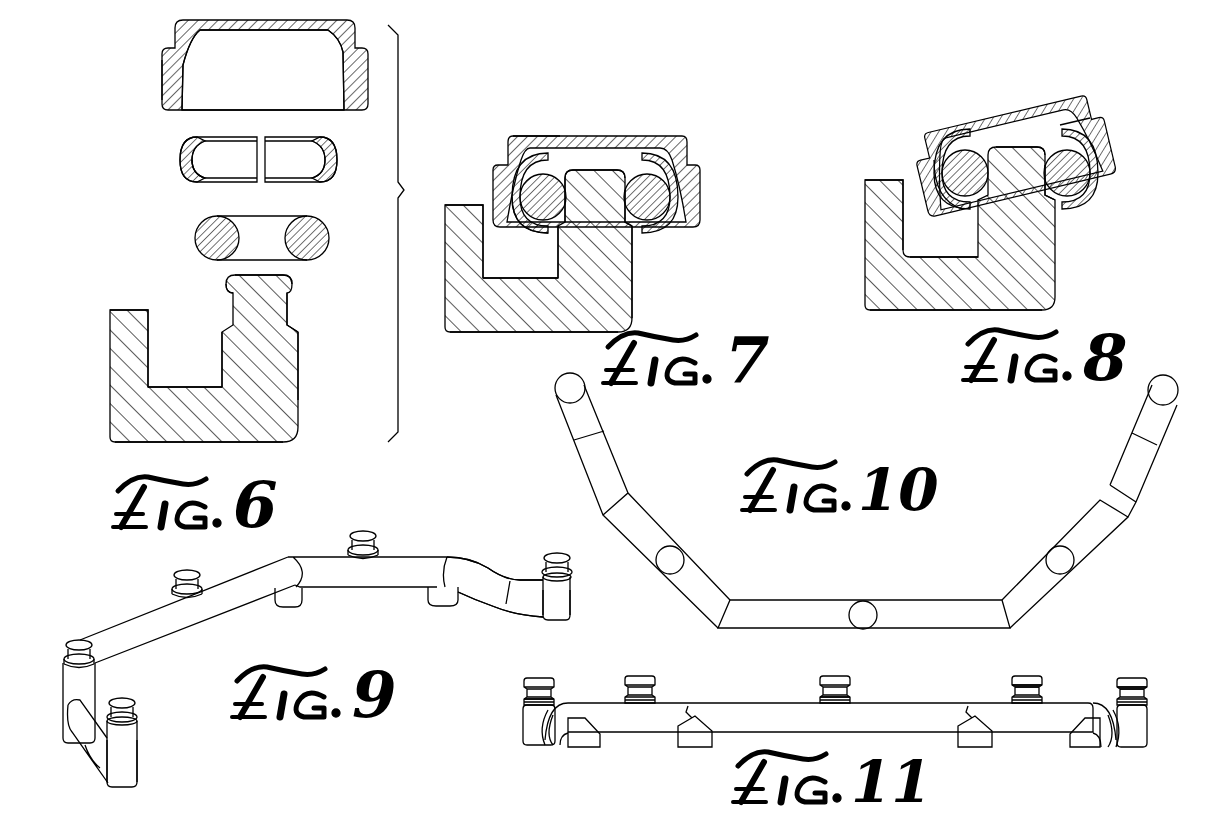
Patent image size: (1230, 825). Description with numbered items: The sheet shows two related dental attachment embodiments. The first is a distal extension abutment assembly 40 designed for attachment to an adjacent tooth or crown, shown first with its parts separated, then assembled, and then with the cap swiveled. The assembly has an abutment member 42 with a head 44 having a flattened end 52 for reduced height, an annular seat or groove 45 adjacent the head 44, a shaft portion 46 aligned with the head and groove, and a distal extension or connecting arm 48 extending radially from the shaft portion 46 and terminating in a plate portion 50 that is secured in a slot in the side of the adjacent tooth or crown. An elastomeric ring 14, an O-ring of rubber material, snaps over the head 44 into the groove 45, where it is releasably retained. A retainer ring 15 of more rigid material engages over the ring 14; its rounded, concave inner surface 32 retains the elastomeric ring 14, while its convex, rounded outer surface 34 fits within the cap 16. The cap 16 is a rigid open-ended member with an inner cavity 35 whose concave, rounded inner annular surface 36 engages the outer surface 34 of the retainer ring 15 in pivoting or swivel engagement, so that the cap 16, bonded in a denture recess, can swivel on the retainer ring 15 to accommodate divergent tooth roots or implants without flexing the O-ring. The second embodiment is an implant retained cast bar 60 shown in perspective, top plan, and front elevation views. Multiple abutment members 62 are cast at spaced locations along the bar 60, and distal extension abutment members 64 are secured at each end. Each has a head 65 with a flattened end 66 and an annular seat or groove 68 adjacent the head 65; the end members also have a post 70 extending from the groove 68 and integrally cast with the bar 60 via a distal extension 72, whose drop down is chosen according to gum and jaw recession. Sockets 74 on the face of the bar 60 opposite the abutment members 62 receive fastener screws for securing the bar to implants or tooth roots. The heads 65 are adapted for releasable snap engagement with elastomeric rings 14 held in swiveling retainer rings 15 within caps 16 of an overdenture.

In FIG. 6, the elastomeric ring 14 is at (200, 240).
In FIG. 7, the elastomeric ring 14 is at (648, 187).
In FIG. 8, the elastomeric ring 14 is at (1074, 173).
In FIG. 6, the retainer ring 15 is at (185, 160).
In FIG. 7, the retainer ring 15 is at (684, 190).
In FIG. 8, the retainer ring 15 is at (1096, 190).
In FIG. 6, the cap 16 is at (158, 97).
In FIG. 7, the cap 16 is at (586, 131).
In FIG. 8, the cap 16 is at (993, 112).
In FIG. 6, the concave inner surface 32 is at (205, 180).
In FIG. 7, the concave inner surface 32 is at (518, 190).
In FIG. 8, the concave inner surface 32 is at (943, 160).
In FIG. 6, the convex outer surface 34 is at (338, 157).
In FIG. 7, the convex outer surface 34 is at (502, 230).
In FIG. 8, the convex outer surface 34 is at (935, 137).
In FIG. 6, the inner cavity 35 is at (244, 84).
In FIG. 6, the inner annular surface 36 is at (184, 75).
In FIG. 7, the inner annular surface 36 is at (530, 157).
In FIG. 8, the inner annular surface 36 is at (1070, 128).
In FIG. 6, the abutment assembly 40 is at (414, 233).
In FIG. 6, the abutment member 42 is at (300, 368).
In FIG. 7, the abutment member 42 is at (638, 280).
In FIG. 8, the abutment member 42 is at (1063, 250).
In FIG. 6, the head 44 is at (290, 280).
In FIG. 7, the head 44 is at (623, 167).
In FIG. 8, the head 44 is at (1030, 148).
In FIG. 6, the annular seat or groove 45 is at (290, 305).
In FIG. 7, the annular seat or groove 45 is at (612, 212).
In FIG. 8, the annular seat or groove 45 is at (1034, 190).
In FIG. 6, the shaft portion 46 is at (270, 350).
In FIG. 7, the shaft portion 46 is at (582, 267).
In FIG. 6, the distal extension or connecting arm 48 is at (190, 400).
In FIG. 7, the distal extension or connecting arm 48 is at (527, 323).
In FIG. 8, the distal extension or connecting arm 48 is at (947, 298).
In FIG. 6, the plate portion 50 is at (128, 360).
In FIG. 7, the plate portion 50 is at (462, 240).
In FIG. 8, the plate portion 50 is at (880, 195).
In FIG. 6, the flattened end 52 is at (230, 283).
In FIG. 7, the flattened end 52 is at (603, 167).
In FIG. 9, the cast bar 60 is at (380, 576).
In FIG. 10, the cast bar 60 is at (935, 597).
In FIG. 11, the cast bar 60 is at (909, 712).
In FIG. 9, the abutment members 62 is at (78, 634).
In FIG. 10, the abutment members 62 is at (1049, 550).
In FIG. 11, the abutment members 62 is at (824, 683).
In FIG. 9, the distal extension abutment members 64 is at (141, 732).
In FIG. 10, the distal extension abutment members 64 is at (553, 390).
In FIG. 11, the distal extension abutment members 64 is at (556, 687).
In FIG. 9, the head 65 is at (189, 570).
In FIG. 11, the head 65 is at (1043, 680).
In FIG. 11, the flattened end 66 is at (1131, 678).
In FIG. 11, the annular seat or groove 68 is at (524, 684).
In FIG. 9, the post 70 is at (128, 767).
In FIG. 11, the post 70 is at (532, 716).
In FIG. 9, the distal extension 72 is at (93, 742).
In FIG. 11, the distal extension 72 is at (558, 733).
In FIG. 9, the sockets 74 is at (443, 608).
In FIG. 11, the sockets 74 is at (698, 745).